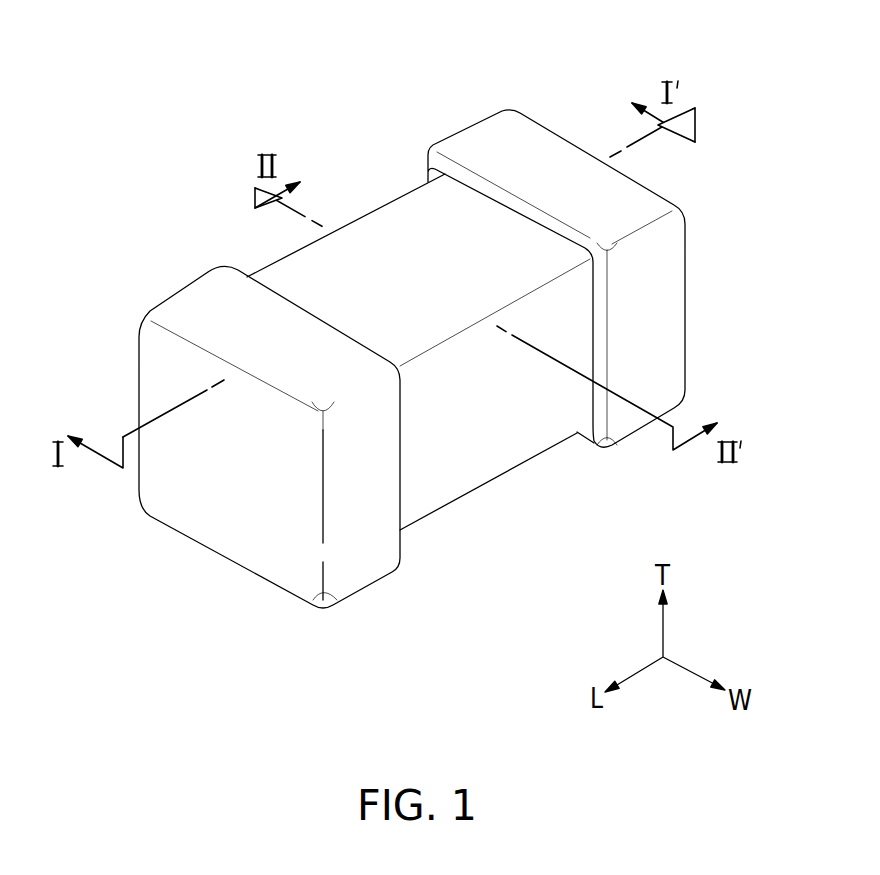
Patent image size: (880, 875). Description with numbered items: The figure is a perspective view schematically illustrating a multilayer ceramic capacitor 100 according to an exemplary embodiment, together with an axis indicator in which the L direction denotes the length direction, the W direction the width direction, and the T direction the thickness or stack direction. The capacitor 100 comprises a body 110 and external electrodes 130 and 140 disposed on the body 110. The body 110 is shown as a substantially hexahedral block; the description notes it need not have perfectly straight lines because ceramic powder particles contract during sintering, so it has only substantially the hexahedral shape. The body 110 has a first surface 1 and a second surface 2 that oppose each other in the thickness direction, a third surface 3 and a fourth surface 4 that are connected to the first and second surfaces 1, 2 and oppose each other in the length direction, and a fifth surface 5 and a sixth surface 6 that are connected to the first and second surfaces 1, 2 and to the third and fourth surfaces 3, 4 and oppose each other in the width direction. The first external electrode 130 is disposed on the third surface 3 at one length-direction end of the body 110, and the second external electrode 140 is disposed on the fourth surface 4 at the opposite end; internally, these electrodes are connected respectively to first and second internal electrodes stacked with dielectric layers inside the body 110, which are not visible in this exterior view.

The multilayer ceramic capacitor 100 is at (271, 45).
The body 110 is at (287, 286).
The first external electrode 130 is at (195, 296).
The second external electrode 140 is at (473, 147).
The first surface 1 is at (436, 478).
The second surface 2 is at (418, 205).
The third surface 3 is at (209, 495).
The fourth surface 4 is at (633, 270).
The fifth surface 5 is at (518, 421).
The sixth surface 6 is at (378, 244).